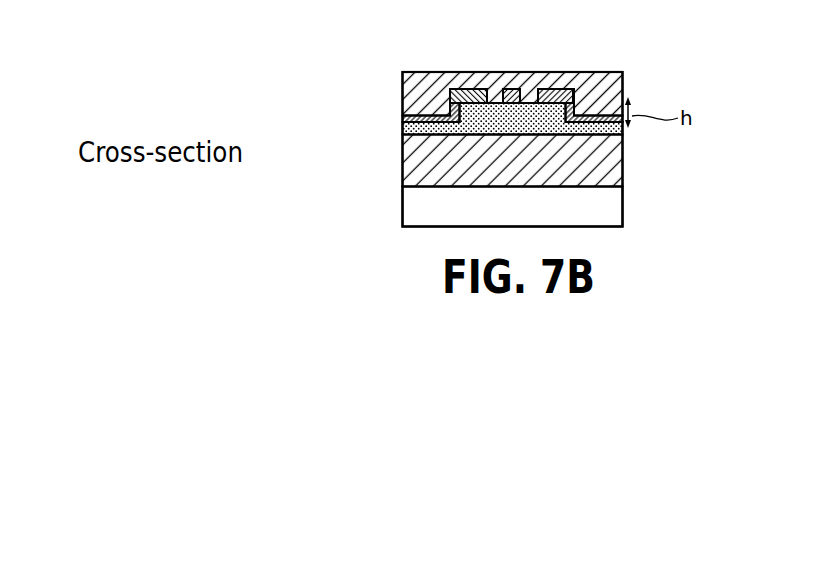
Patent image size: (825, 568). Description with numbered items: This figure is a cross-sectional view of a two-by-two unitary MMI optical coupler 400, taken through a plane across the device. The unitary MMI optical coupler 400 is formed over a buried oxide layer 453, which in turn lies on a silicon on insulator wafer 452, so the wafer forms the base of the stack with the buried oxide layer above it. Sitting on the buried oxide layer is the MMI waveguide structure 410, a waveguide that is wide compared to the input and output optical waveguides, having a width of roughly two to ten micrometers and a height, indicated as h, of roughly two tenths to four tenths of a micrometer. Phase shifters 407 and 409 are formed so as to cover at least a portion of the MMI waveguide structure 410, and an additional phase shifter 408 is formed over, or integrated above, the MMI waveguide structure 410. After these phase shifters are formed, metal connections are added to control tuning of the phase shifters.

The unitary MMI optical coupler 400 is at (670, 47).
The phase shifter 407 is at (420, 115).
The additional phase shifter 408 is at (512, 87).
The phase shifter 409 is at (588, 98).
The MMI waveguide structure 410 is at (528, 118).
The silicon on insulator wafer 452 is at (623, 205).
The buried oxide layer 453 is at (403, 147).